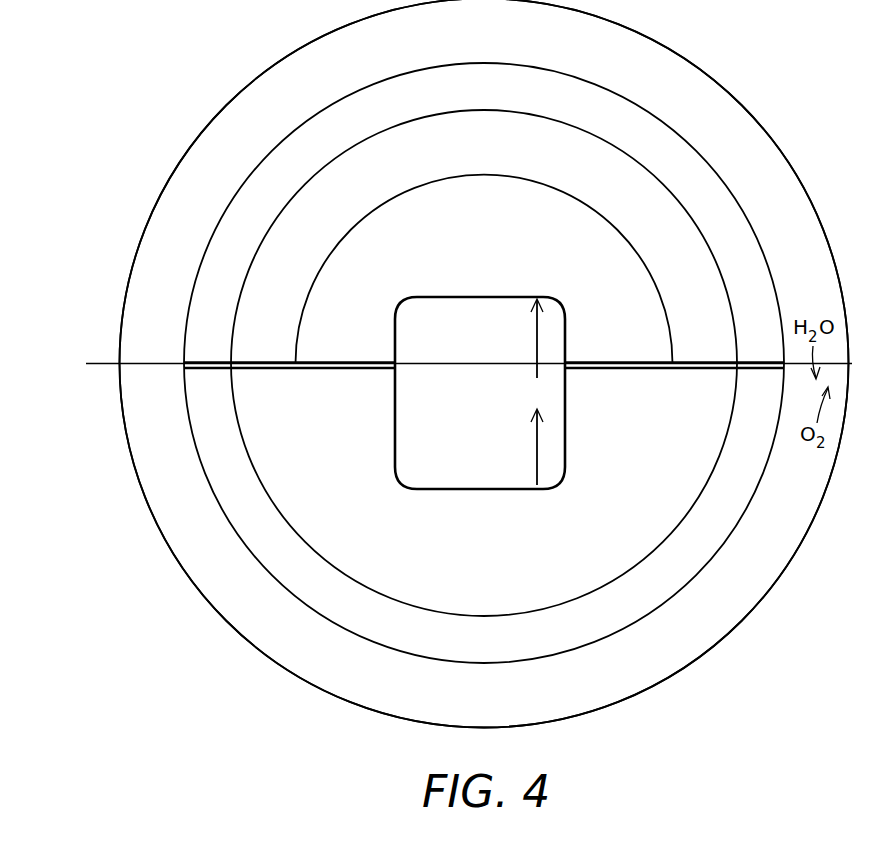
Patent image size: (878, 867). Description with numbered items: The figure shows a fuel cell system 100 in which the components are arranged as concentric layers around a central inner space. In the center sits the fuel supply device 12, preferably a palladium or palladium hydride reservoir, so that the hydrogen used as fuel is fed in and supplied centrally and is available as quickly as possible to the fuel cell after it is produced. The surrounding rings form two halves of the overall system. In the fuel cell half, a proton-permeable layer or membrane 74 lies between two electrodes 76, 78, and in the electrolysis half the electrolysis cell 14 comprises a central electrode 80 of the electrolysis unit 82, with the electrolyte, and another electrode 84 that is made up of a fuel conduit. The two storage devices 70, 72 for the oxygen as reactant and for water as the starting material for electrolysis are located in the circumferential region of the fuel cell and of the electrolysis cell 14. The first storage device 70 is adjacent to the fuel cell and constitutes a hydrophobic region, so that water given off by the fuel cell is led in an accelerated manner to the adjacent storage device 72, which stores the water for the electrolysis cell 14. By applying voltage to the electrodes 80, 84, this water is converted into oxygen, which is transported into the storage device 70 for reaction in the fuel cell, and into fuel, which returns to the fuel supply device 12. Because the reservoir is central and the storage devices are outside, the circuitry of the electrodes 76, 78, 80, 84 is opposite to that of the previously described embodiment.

The fuel cell system 100 is at (218, 114).
The electrolysis cell 14 is at (126, 462).
The fuel supply device 12 is at (480, 311).
The storage device 70 is at (226, 179).
The storage device 72 is at (512, 704).
The proton-permeable layer or membrane 74 is at (315, 245).
The electrode 76 is at (395, 285).
The electrode 78 is at (269, 213).
The central electrode 80 is at (259, 607).
The electrolysis unit 82 is at (250, 501).
The electrode 84 is at (331, 435).